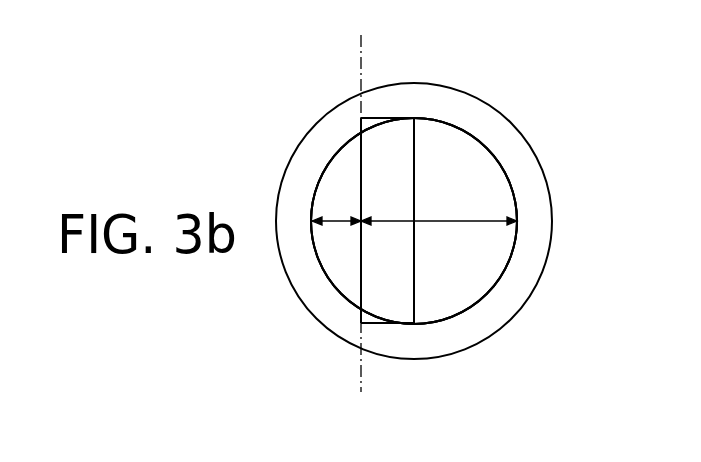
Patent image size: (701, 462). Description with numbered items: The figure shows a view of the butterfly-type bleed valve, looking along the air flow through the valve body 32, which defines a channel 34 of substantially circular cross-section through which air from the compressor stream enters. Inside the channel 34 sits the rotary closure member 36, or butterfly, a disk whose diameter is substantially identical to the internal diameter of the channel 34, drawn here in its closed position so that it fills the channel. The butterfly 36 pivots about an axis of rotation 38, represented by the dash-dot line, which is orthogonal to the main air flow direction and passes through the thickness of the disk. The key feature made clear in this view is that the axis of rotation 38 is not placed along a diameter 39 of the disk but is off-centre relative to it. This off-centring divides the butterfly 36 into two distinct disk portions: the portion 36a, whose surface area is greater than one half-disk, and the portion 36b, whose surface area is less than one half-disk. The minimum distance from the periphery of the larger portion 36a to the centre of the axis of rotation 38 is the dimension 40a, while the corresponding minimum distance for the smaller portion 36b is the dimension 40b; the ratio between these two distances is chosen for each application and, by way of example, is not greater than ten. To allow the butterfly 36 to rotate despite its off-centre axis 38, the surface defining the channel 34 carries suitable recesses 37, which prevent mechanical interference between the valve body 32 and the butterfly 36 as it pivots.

The valve body 32 is at (313, 164).
The channel 34 is at (470, 307).
The rotary closure member 36 is at (462, 168).
The disk portion 36a is at (420, 153).
The disk portion 36b is at (340, 250).
The recesses 37 is at (368, 118).
The axis of rotation 38 is at (361, 58).
The diameter 39 is at (412, 157).
The minimum distance 40a is at (450, 219).
The minimum distance 40b is at (335, 220).